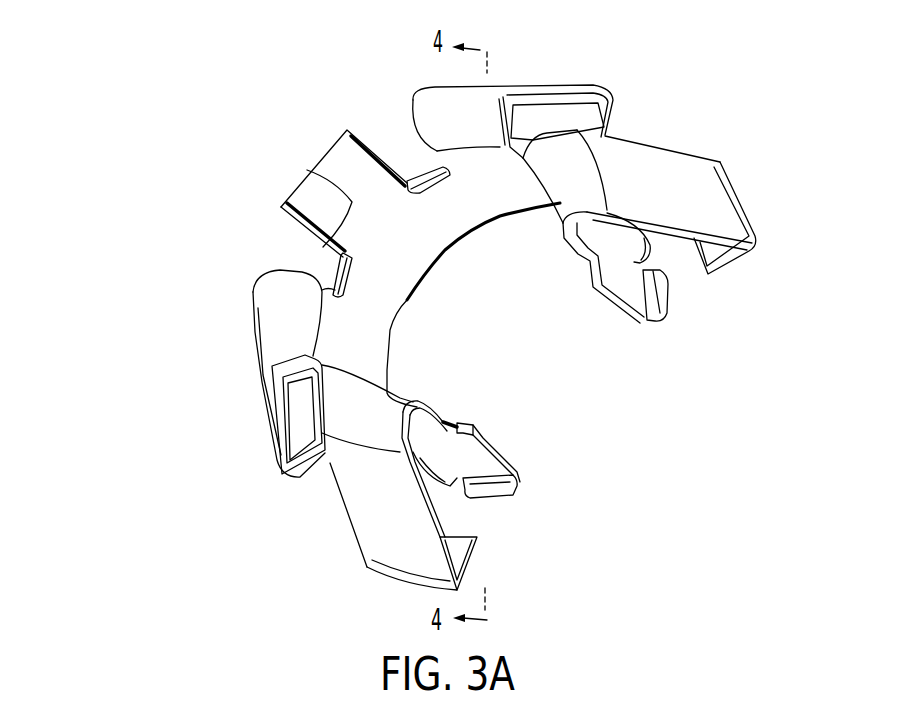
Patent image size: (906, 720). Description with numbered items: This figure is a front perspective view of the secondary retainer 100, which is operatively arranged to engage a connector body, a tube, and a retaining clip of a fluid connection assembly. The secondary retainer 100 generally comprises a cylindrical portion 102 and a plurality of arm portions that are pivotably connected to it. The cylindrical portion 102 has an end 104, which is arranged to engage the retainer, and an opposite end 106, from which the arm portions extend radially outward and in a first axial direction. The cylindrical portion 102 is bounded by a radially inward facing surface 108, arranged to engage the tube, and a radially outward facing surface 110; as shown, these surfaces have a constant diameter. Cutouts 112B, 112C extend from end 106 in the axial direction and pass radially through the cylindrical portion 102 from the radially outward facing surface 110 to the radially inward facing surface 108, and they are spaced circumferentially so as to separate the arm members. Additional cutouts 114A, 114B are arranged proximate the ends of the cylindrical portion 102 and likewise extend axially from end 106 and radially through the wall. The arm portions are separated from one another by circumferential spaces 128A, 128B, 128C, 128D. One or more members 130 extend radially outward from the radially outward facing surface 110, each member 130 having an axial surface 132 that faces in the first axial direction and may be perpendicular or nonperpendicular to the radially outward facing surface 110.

The secondary retainer 100 is at (146, 78).
The cylindrical portion 102 is at (388, 240).
The end 104 is at (520, 468).
The end 106 is at (307, 170).
The radially inward facing surface 108 is at (443, 207).
The radially outward facing surface 110 is at (480, 450).
The cutout 112B is at (322, 271).
The cutout 112C is at (400, 160).
The cutout 114A is at (449, 410).
The cutout 114B is at (574, 259).
The circumferential space 128A is at (318, 478).
The circumferential space 128B is at (226, 301).
The circumferential space 128C is at (330, 116).
The circumferential space 128D is at (656, 131).
The member 130 is at (660, 297).
The axial surface 132 is at (667, 293).